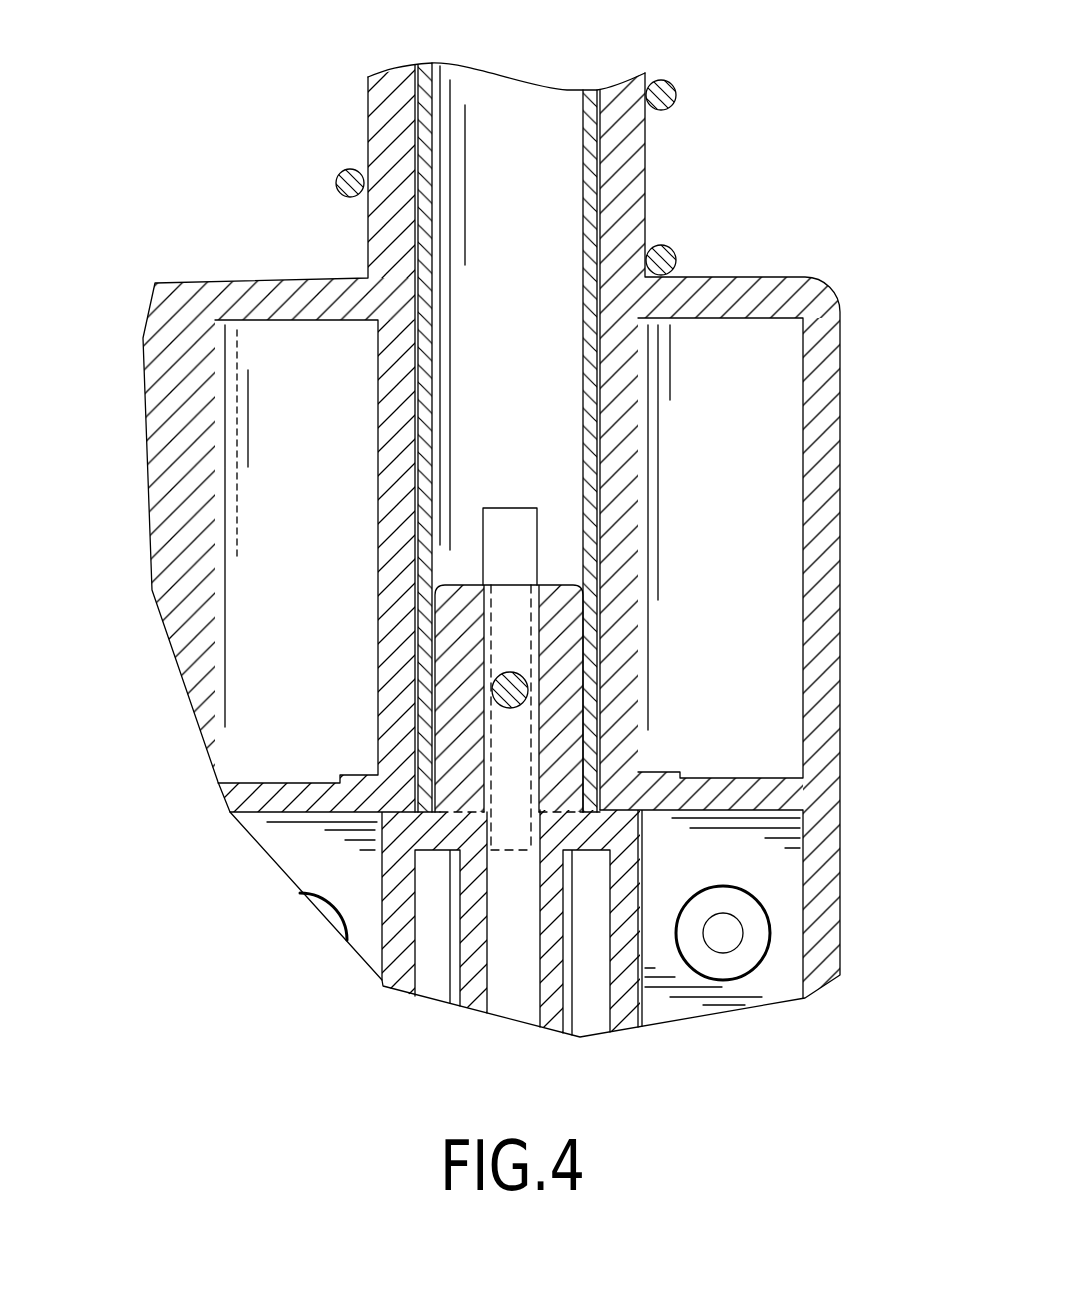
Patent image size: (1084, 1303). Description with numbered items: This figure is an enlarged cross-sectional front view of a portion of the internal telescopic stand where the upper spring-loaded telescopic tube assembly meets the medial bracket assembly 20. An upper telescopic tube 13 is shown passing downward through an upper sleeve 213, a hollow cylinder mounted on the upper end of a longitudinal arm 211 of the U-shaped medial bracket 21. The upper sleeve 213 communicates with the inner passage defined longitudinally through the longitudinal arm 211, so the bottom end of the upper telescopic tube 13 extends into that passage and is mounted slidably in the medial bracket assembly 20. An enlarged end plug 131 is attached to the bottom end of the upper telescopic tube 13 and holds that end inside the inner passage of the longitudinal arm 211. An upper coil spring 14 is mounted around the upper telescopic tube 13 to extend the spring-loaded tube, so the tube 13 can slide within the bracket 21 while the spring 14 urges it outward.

The upper telescopic tube 13 is at (549, 549).
The end plug 131 is at (628, 860).
The upper coil spring 14 is at (667, 98).
The medial bracket assembly 20 is at (530, 550).
The U-shaped medial bracket 21 is at (530, 550).
The longitudinal arm 211 is at (828, 923).
The upper sleeve 213 is at (383, 120).